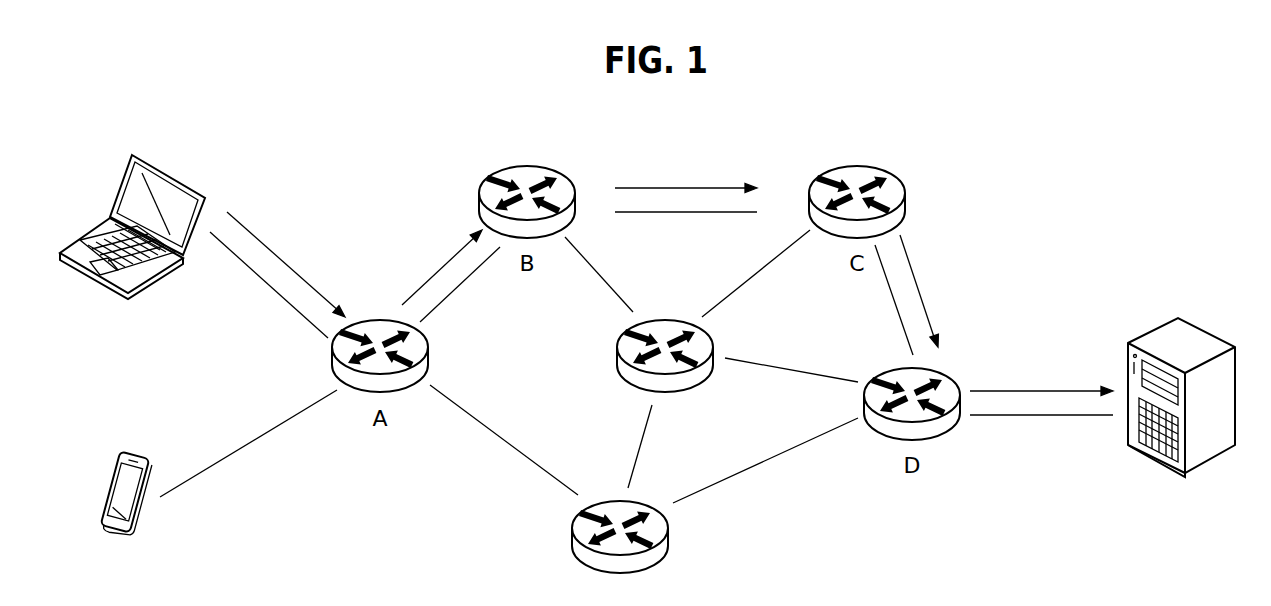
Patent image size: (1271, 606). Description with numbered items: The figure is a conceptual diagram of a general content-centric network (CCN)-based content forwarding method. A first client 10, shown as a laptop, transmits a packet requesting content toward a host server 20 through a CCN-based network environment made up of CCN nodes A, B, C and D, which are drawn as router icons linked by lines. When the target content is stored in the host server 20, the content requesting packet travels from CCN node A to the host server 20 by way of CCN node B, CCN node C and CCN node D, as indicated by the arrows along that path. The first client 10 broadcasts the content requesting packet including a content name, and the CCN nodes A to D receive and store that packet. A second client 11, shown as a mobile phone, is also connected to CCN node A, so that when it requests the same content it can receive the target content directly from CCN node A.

The first client 10 is at (167, 167).
The second client 11 is at (125, 452).
The host server 20 is at (1178, 318).